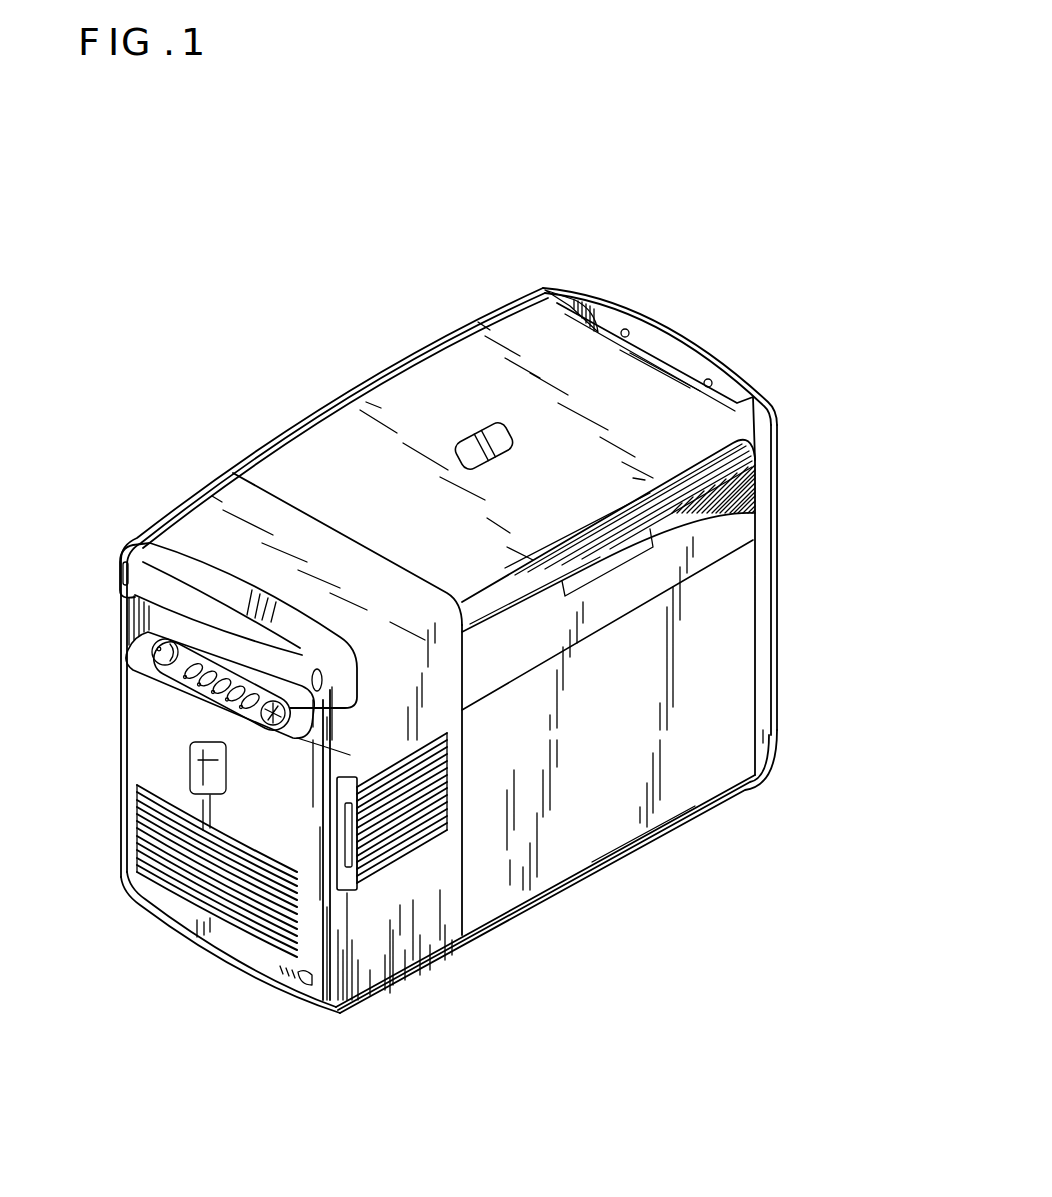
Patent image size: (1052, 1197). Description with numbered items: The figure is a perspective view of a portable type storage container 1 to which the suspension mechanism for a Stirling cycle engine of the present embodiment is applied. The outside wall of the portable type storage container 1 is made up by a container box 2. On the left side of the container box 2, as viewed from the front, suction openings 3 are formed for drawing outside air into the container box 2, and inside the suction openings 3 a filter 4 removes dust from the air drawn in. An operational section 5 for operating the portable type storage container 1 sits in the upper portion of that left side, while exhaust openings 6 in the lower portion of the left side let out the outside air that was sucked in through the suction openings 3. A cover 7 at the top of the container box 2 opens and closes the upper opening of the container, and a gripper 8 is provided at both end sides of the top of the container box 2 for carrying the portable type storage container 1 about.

The portable type storage container 1 is at (687, 283).
The container box 2 is at (225, 513).
The suction openings 3 is at (410, 822).
The filter 4 is at (347, 892).
The operational section 5 is at (170, 668).
The exhaust openings 6 is at (210, 887).
The cover 7 is at (577, 505).
The gripper 8 is at (722, 366).